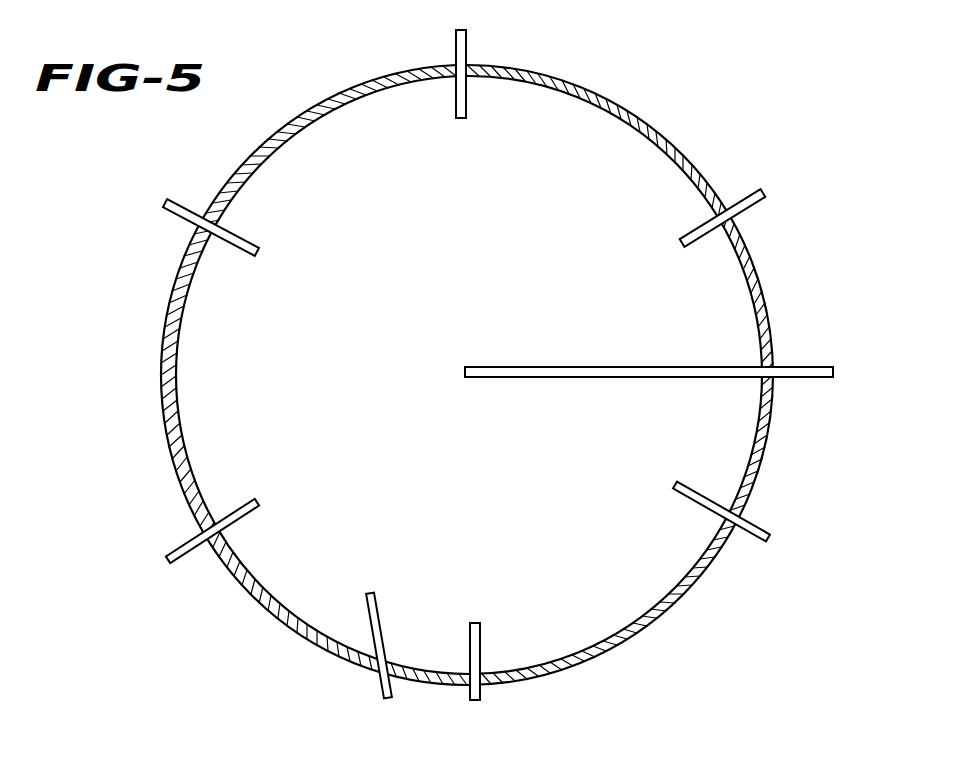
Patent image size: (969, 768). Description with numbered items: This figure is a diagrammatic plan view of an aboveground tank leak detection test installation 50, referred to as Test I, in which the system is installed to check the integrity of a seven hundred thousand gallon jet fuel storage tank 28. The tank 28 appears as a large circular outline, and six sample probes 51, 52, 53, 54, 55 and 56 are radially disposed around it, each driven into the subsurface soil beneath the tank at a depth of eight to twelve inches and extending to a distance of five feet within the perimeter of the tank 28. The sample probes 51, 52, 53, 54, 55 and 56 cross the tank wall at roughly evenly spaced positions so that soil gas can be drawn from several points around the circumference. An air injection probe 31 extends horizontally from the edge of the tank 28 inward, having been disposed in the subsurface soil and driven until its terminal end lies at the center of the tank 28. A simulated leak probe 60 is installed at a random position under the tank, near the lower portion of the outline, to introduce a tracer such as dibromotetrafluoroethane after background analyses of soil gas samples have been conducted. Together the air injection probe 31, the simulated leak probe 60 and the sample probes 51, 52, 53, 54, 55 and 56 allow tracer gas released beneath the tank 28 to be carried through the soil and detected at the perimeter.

The fuel storage tank 28 is at (164, 358).
The air injection probe 31 is at (815, 367).
The assembly 50 is at (662, 121).
The sample probe 51 is at (770, 522).
The sample probe 52 is at (481, 690).
The sample probe 53 is at (178, 542).
The sample probe 54 is at (182, 200).
The sample probe 55 is at (467, 52).
The sample probe 56 is at (762, 206).
The simulated leak probe 60 is at (371, 686).